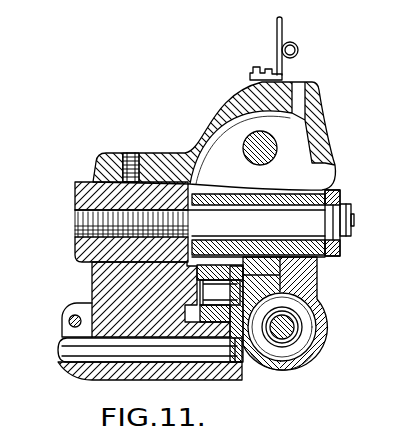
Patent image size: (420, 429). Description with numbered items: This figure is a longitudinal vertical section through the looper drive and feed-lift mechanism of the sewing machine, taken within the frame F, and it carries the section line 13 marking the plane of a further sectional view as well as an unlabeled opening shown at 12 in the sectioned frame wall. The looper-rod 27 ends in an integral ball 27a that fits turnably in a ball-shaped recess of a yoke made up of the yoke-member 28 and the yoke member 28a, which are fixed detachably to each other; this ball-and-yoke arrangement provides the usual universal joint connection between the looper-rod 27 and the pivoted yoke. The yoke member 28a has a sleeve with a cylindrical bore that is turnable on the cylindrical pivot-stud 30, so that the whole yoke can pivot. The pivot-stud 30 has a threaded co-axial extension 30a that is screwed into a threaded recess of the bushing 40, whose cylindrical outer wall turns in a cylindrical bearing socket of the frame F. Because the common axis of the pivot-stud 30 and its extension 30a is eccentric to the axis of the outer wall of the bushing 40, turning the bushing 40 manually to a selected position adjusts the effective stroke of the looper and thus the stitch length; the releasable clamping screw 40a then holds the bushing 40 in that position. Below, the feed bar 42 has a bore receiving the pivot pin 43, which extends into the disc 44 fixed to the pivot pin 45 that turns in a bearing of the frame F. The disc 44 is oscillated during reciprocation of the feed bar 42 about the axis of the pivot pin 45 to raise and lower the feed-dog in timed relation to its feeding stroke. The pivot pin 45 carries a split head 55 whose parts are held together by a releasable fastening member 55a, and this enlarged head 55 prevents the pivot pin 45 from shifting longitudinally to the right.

The shaft opening 12 is at (275, 147).
The section line 13— 13 is at (43, 120).
The looper-rod 27 is at (284, 327).
The ball 27a is at (293, 305).
The yoke-member 28 is at (319, 339).
The yoke member 28a is at (262, 363).
The pivot-stud 30 is at (330, 220).
The threaded co-axial extension 30a is at (73, 212).
The bushing 40 is at (78, 247).
The clamping screw 40a is at (129, 152).
The feed-bar 42 is at (214, 268).
The pivot pin 43 is at (207, 292).
The disc 44 is at (237, 332).
The pivot pin 45 is at (68, 352).
The split head 55 is at (62, 323).
The fastening member 55a is at (70, 317).
The frame F is at (225, 102).